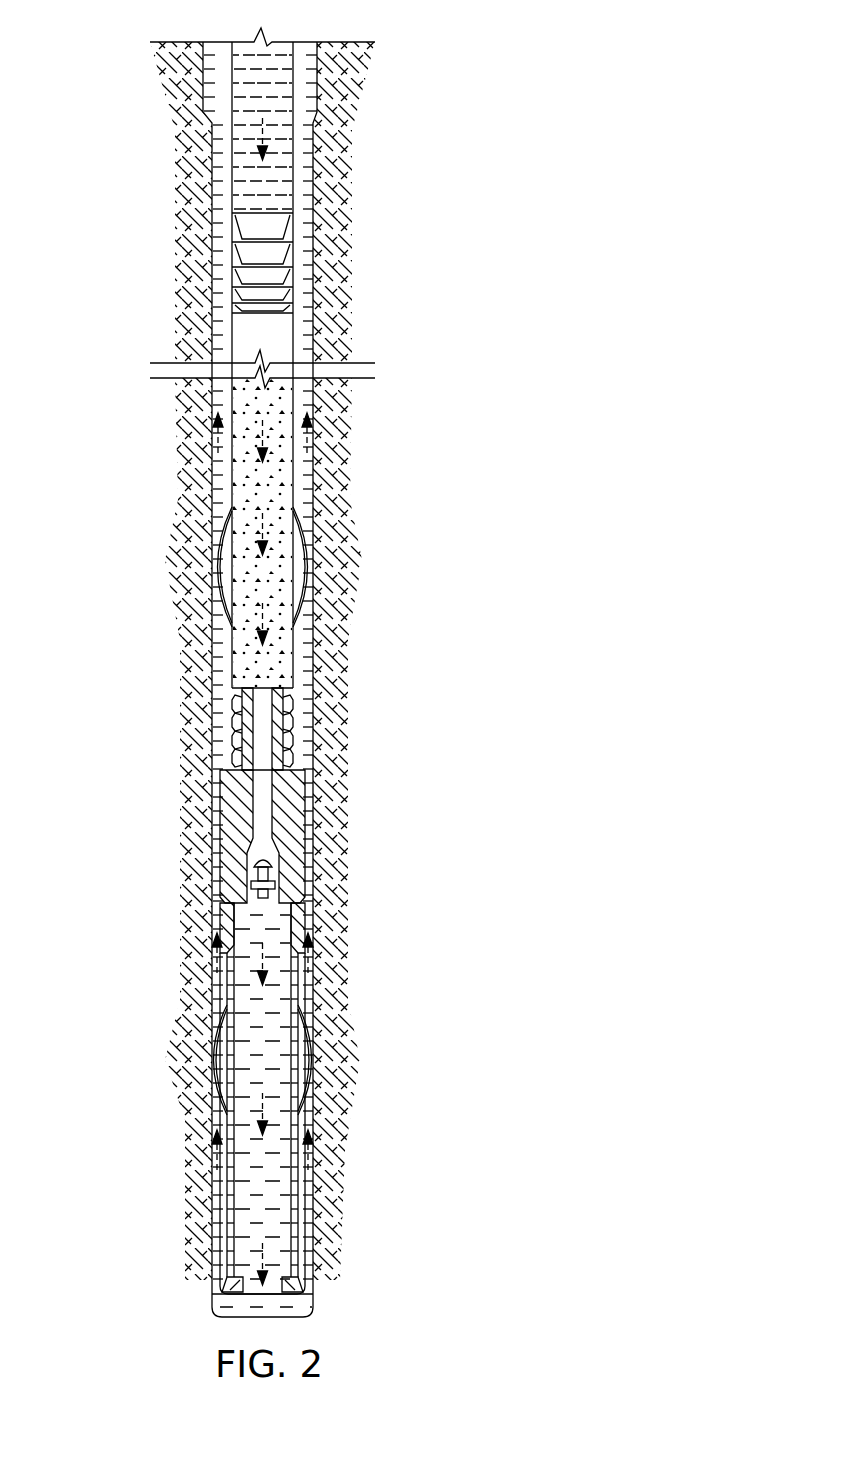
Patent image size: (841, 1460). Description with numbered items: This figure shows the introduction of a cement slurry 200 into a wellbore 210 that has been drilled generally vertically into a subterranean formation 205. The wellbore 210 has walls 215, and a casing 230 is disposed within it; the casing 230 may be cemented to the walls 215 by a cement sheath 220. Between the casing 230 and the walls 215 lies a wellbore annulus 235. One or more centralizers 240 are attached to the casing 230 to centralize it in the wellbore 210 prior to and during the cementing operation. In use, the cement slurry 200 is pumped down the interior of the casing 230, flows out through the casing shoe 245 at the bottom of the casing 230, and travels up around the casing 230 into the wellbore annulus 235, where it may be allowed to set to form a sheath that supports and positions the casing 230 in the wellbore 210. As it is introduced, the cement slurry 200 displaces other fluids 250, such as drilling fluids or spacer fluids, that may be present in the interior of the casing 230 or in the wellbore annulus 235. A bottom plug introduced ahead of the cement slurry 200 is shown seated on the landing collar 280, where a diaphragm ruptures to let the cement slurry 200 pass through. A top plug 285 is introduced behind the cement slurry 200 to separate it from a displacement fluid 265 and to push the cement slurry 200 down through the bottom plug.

The cement slurry 200 is at (270, 507).
The subterranean formation 205 is at (490, 711).
The wellbore 210 is at (330, 567).
The walls 215 is at (315, 222).
The cement sheath 220 is at (310, 50).
The casing 230 is at (295, 492).
The wellbore annulus 235 is at (212, 488).
The centralizers 240 is at (210, 1073).
The casing shoe 245 is at (198, 1240).
The fluids 250 is at (263, 933).
The displacement fluid 265 is at (263, 118).
The landing collar 280 is at (233, 705).
The top plug 285 is at (232, 265).